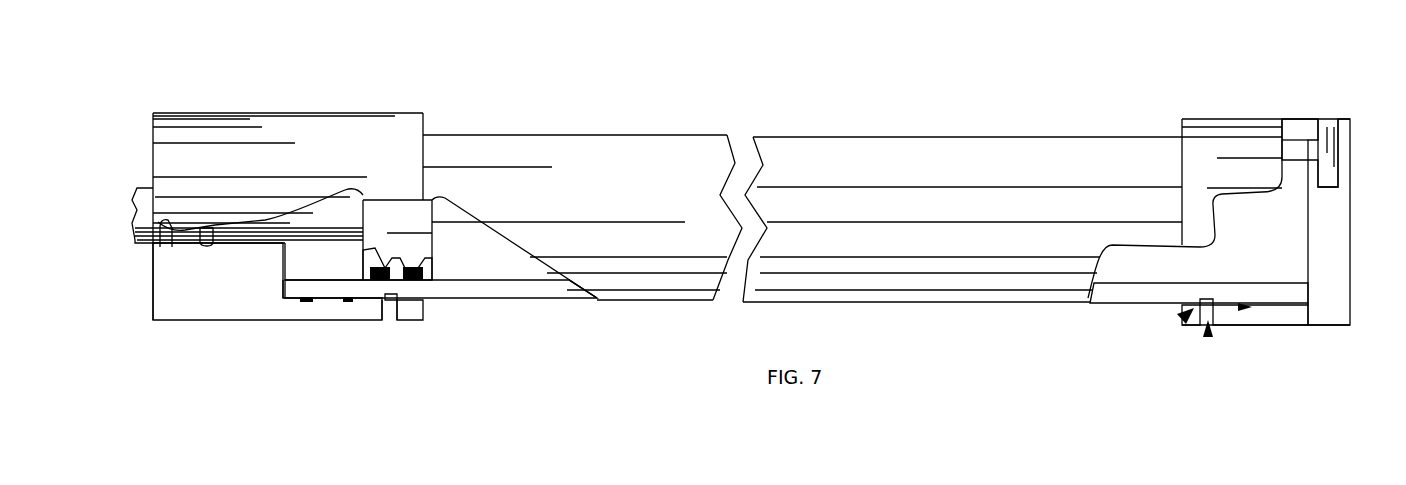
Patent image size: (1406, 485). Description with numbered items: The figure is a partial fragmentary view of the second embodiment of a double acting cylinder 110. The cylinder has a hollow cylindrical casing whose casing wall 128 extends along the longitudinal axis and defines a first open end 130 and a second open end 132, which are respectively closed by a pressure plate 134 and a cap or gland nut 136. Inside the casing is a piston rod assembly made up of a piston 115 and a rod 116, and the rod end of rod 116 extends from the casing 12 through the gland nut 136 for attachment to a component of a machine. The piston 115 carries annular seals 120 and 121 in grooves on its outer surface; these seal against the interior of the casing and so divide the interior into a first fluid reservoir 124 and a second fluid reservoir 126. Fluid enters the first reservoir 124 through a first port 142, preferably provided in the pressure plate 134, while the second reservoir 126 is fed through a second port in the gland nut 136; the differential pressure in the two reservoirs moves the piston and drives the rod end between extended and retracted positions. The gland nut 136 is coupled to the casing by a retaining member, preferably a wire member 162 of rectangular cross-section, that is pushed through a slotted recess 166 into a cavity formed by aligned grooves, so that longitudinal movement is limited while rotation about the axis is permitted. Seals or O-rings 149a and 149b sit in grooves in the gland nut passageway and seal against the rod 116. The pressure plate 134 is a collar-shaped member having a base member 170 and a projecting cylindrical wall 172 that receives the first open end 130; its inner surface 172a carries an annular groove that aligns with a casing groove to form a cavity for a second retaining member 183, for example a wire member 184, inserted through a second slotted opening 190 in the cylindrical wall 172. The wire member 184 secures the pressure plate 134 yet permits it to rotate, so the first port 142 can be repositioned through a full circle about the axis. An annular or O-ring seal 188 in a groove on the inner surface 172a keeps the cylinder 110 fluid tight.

The casing 12 is at (553, 302).
The double acting cylinder 110 is at (1016, 121).
The piston 115 is at (423, 225).
The rod 116 is at (137, 188).
The annular seal 120 is at (366, 277).
The annular seal 121 is at (430, 279).
The first fluid reservoir 124 is at (483, 299).
The second fluid reservoir 126 is at (285, 282).
The casing wall 128 is at (527, 292).
The first open end 130 is at (1345, 327).
The second open end 132 is at (300, 270).
The pressure plate 134 is at (1229, 118).
The cap or gland nut 136 is at (360, 114).
The first port 142 is at (1333, 118).
The seal or O-ring 149a is at (162, 240).
The seal or O-ring 149b is at (197, 247).
The wire member 162 is at (390, 302).
The slotted recess 166 is at (392, 322).
The base member 170 is at (1333, 208).
The cylindrical wall 172 is at (1180, 306).
The inner surface 172a is at (1292, 303).
The second retaining member 183 is at (1181, 318).
The wire member 184 is at (1204, 306).
The annular or O-ring seal 188 is at (1243, 310).
The second slotted opening 190 is at (1212, 338).